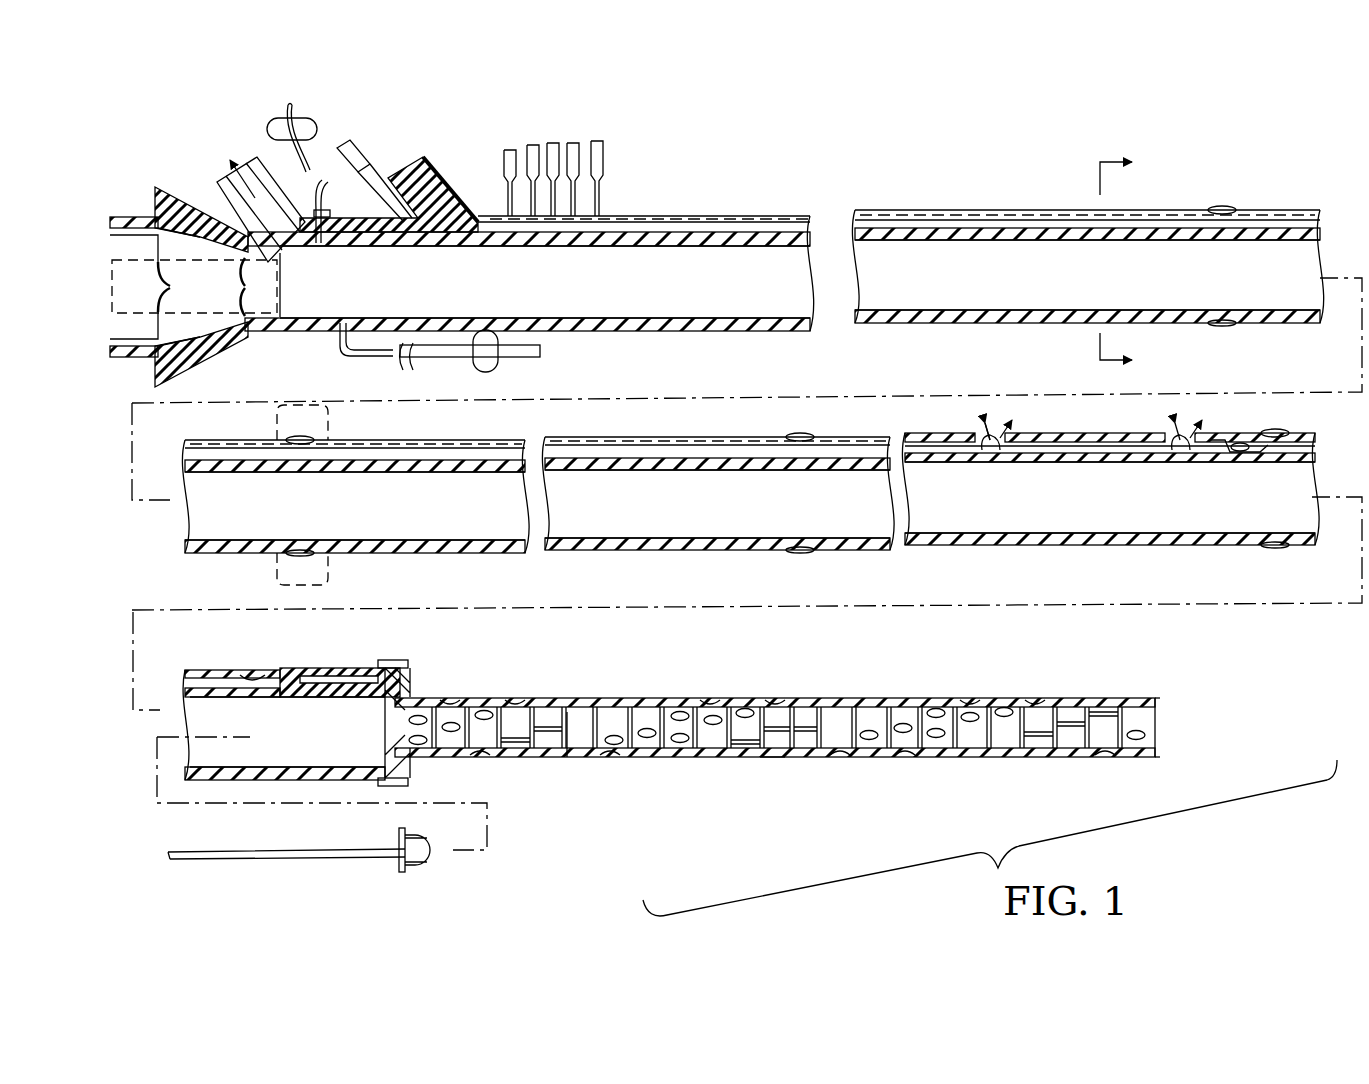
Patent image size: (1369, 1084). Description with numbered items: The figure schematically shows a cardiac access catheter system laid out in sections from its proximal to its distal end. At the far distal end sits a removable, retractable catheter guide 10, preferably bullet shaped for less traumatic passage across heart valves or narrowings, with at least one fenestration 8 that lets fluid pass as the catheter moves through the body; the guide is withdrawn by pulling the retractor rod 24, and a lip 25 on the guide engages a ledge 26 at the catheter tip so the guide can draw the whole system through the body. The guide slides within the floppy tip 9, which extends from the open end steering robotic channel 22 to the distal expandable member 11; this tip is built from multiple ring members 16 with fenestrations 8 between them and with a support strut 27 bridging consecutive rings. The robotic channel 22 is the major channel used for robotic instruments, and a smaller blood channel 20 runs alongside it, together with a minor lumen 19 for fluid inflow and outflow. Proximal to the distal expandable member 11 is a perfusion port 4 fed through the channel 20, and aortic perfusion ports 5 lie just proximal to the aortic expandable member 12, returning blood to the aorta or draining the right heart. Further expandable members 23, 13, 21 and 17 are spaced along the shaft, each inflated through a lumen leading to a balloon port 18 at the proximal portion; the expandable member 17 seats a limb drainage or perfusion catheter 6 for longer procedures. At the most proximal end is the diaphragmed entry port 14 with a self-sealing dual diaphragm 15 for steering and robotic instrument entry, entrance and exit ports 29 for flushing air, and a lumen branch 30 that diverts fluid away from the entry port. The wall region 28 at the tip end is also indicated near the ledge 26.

The perfusion port 4 is at (260, 672).
The aortic perfusion ports 5 is at (1005, 422).
The limb drainage or perfusion catheter 6 is at (300, 170).
The fenestration 8 is at (970, 712).
The floppy tip 9 is at (770, 757).
The catheter guide 10 is at (428, 864).
The distal expandable member 11 is at (392, 660).
The aortic expandable member 12 is at (1278, 431).
The expandable member 13 is at (1227, 207).
The diaphragmed entry port 14 is at (126, 290).
The self-sealing dual diaphragm 15 is at (178, 296).
The ring members 16 is at (1035, 706).
The compartment expandable member 17 is at (297, 108).
The balloon port 18 is at (598, 140).
The minor lumen 19 is at (352, 143).
The channel 20 is at (432, 170).
The expandable member 21 is at (800, 435).
The open end steering robotic channel 22 is at (705, 272).
The expandable member 23 is at (305, 440).
The retractor rod 24 is at (222, 856).
The lip 25 is at (403, 875).
The ledge 26 is at (1158, 758).
The support strut 27 is at (583, 720).
The upper wall 28 is at (1158, 720).
The entrance and exit ports 29 is at (110, 226).
The lumen branch 30 is at (228, 160).